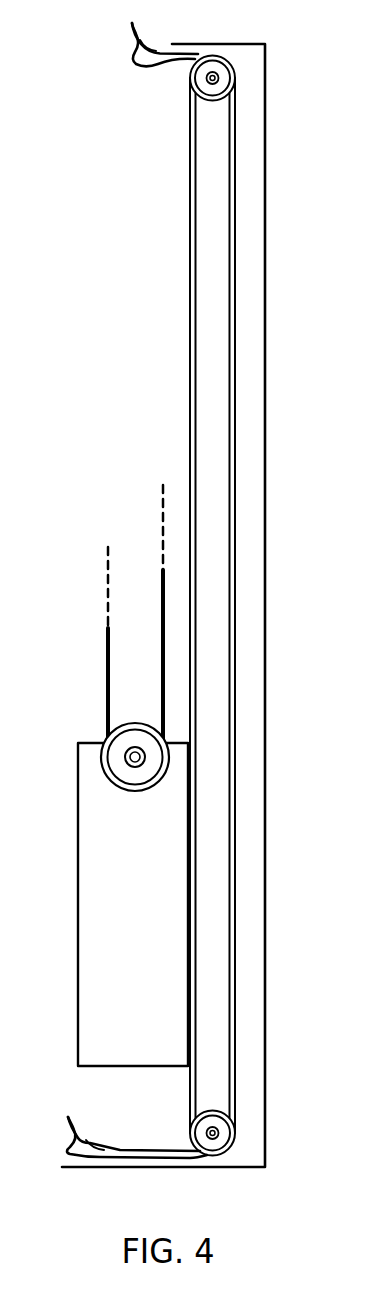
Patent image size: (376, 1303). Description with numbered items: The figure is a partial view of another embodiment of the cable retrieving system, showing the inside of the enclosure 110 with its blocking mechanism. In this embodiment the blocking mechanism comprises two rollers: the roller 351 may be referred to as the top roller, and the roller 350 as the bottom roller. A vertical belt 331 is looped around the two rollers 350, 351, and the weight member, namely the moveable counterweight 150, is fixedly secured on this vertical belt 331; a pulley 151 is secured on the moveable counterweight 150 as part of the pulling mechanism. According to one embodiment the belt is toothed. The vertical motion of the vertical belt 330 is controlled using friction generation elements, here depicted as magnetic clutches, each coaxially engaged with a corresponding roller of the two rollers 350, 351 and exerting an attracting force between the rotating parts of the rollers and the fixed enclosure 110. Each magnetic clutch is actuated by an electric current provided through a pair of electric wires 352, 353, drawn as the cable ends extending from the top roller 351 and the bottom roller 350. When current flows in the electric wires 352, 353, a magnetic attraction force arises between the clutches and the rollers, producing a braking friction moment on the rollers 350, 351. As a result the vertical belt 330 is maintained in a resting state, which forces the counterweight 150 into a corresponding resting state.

The enclosure 110 is at (258, 893).
The moveable counterweight 150 is at (92, 922).
The pulley 151 is at (137, 775).
The vertical belt 330 is at (190, 418).
The vertical belt 331 is at (237, 437).
The bottom roller 350 is at (202, 1133).
The top roller 351 is at (200, 80).
The electric wire 352 is at (156, 34).
The electric wire 353 is at (127, 1128).